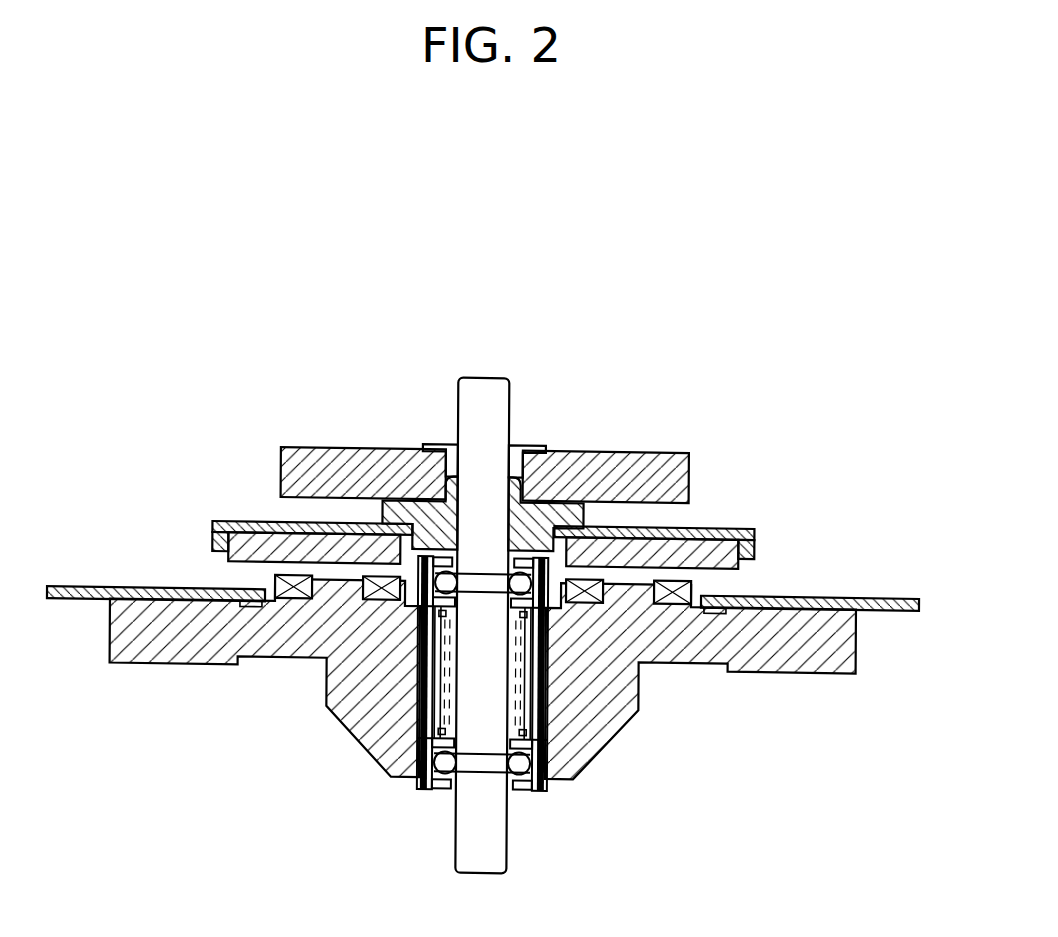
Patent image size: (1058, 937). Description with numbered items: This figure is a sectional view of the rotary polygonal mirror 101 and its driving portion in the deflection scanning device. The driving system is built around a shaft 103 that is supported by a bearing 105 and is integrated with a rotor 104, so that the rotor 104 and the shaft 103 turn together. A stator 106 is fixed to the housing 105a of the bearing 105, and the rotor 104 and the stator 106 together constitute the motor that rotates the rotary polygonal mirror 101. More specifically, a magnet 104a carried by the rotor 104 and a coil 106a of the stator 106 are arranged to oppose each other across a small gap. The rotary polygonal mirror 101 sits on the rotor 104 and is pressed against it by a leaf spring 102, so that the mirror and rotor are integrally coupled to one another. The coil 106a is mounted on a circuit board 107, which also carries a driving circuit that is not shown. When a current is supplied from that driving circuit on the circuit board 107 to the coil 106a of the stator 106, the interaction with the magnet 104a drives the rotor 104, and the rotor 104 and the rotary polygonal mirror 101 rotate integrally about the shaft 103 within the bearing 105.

The rotary polygonal mirror 101 is at (621, 466).
The leaf spring 102 is at (527, 445).
The shaft 103 is at (483, 384).
The rotor 104 is at (715, 521).
The magnet 104a is at (752, 543).
The bearing 105 is at (533, 806).
The housing 105a is at (598, 778).
The stator 106 is at (573, 664).
The coil 106a is at (668, 604).
The circuit board 107 is at (882, 610).